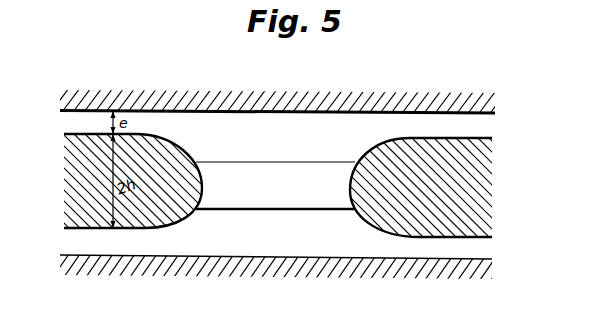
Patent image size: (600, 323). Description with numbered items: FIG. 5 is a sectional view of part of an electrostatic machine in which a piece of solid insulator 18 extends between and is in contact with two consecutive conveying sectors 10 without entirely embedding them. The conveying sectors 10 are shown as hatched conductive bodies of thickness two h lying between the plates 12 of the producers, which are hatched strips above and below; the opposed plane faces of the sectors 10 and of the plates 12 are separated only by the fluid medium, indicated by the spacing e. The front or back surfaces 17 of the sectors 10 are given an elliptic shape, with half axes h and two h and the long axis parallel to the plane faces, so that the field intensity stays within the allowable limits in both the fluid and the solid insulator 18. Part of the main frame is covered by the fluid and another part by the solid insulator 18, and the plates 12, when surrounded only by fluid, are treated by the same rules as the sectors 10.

The conveying sectors 10 is at (72, 175).
The plates of the producers 12 is at (350, 99).
The front or back surfaces 17 is at (205, 182).
The solid insulator 18 is at (255, 198).